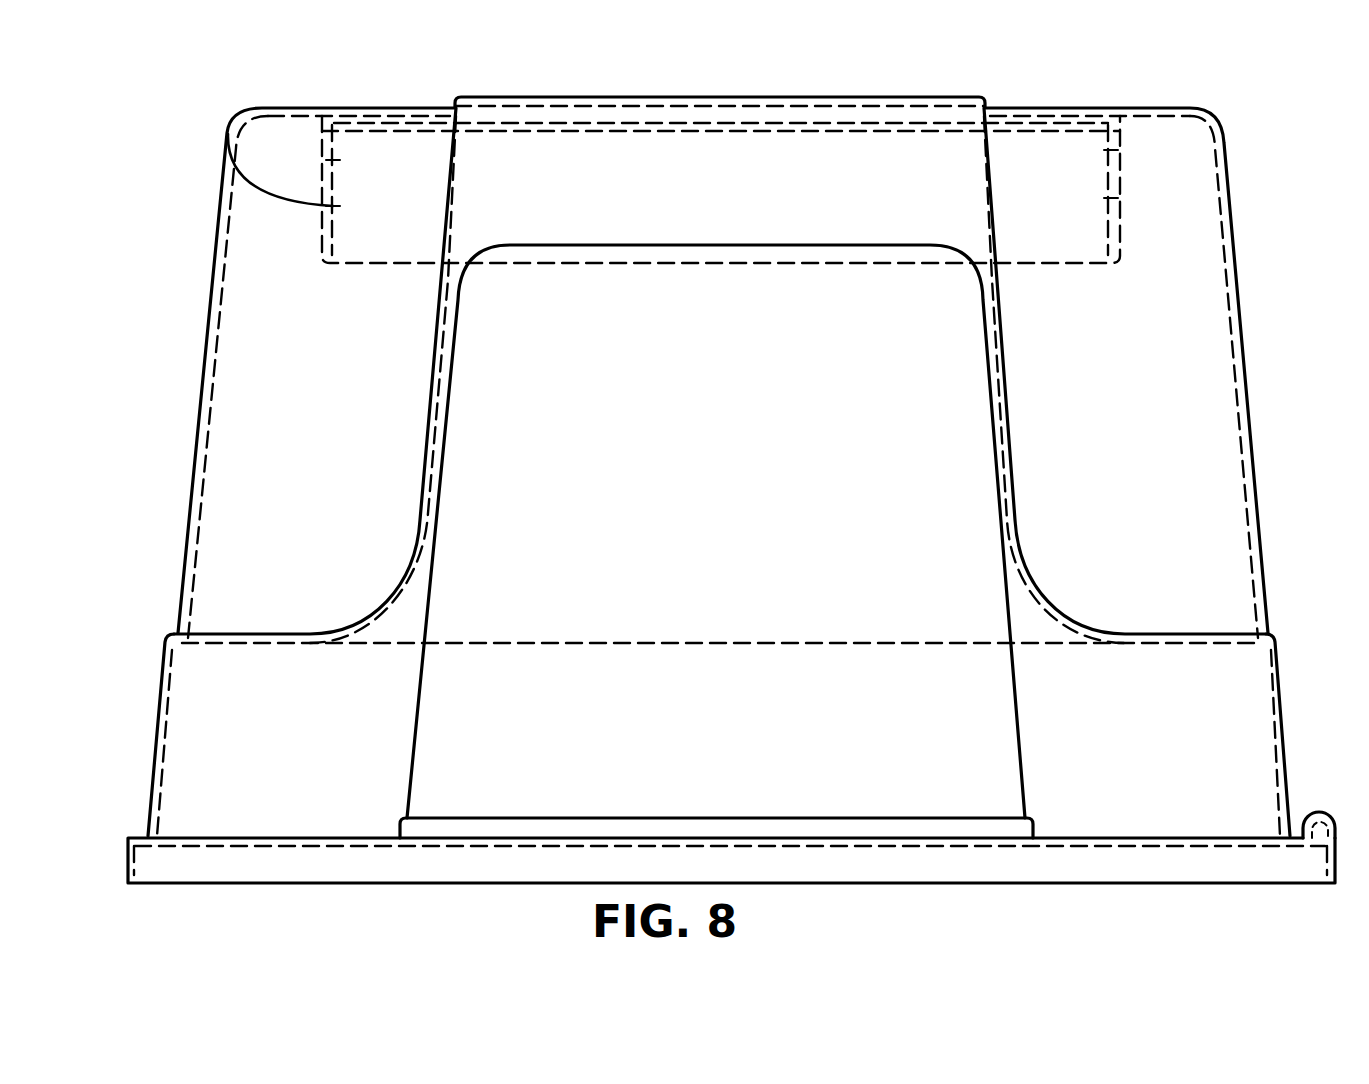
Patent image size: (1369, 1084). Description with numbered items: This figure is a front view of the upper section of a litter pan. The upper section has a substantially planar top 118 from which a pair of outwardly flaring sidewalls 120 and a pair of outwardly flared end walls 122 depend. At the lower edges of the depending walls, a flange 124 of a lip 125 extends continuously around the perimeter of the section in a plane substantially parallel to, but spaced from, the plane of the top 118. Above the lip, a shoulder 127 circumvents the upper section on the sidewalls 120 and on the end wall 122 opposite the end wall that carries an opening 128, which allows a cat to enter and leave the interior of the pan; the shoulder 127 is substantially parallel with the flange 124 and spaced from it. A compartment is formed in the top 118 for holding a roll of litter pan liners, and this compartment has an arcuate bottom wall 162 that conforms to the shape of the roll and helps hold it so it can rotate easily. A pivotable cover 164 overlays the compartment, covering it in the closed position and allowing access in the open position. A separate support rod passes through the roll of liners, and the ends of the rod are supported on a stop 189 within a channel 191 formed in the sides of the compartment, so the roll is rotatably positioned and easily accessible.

The top 118 is at (301, 108).
The sidewalls 120 is at (205, 414).
The end walls 122 is at (322, 464).
The flange 124 is at (1296, 836).
The lip 125 is at (133, 867).
The shoulder 127 is at (178, 632).
The opening 128 is at (1017, 468).
The arcuate bottom wall 162 is at (798, 256).
The pivotable cover 164 is at (380, 120).
The stop 189 is at (228, 134).
The channel 191 is at (333, 167).